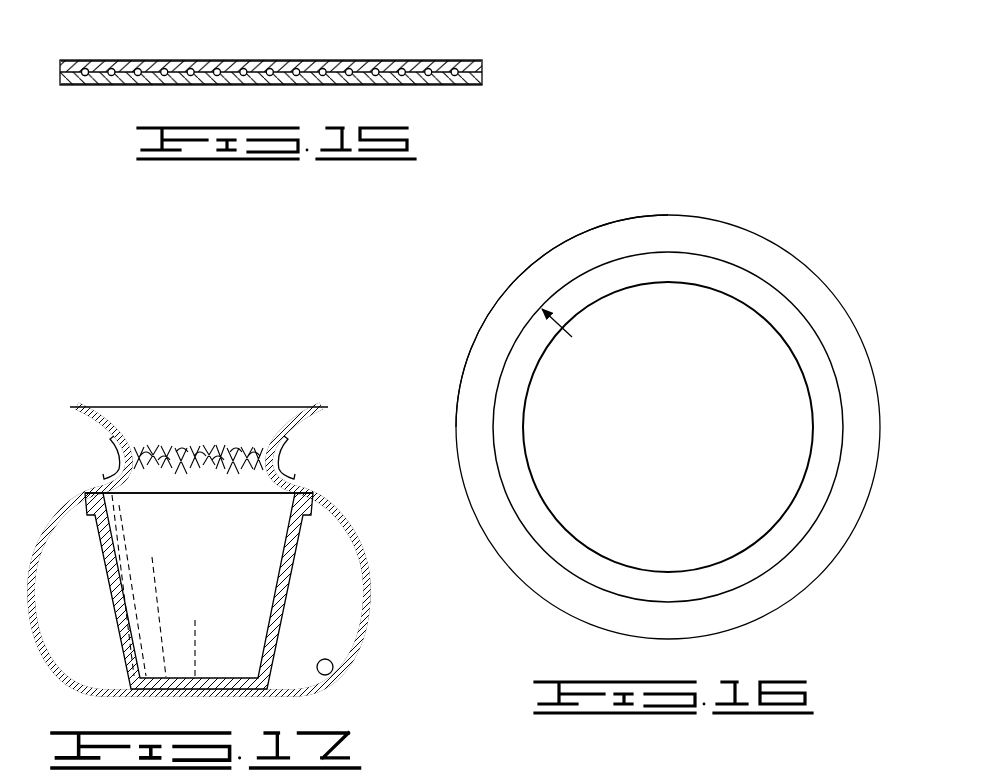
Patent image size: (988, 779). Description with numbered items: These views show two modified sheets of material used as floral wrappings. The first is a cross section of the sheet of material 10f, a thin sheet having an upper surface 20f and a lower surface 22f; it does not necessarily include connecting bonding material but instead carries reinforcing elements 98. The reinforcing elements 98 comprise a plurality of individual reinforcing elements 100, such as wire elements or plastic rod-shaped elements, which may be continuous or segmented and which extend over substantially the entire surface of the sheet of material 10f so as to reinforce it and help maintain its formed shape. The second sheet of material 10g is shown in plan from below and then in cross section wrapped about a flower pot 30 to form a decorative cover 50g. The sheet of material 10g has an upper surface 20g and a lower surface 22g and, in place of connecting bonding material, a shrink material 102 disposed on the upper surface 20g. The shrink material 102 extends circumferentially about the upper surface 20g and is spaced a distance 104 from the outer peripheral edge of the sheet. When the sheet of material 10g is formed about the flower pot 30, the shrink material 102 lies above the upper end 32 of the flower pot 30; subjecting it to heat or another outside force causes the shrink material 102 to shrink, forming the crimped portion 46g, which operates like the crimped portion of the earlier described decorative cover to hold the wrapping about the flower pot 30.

In FIG. 15, the sheet of material 10f is at (169, 56).
In FIG. 15, the upper surface 20f is at (270, 60).
In FIG. 15, the lower surface 22f is at (413, 86).
In FIG. 15, the reinforcing elements 98 is at (111, 63).
In FIG. 15, the reinforcing element 100 is at (85, 81).
In FIG. 16, the sheet of material 10g is at (667, 210).
In FIG. 17, the sheet of material 10g is at (243, 553).
In FIG. 16, the upper surface 20g is at (592, 243).
In FIG. 17, the upper surface 20g is at (328, 675).
In FIG. 17, the lower surface 22g is at (353, 647).
In FIG. 16, the shrink material 102 is at (745, 285).
In FIG. 17, the shrink material 102 is at (278, 460).
In FIG. 16, the distance 104 is at (509, 280).
In FIG. 17, the crimped portion 46g is at (116, 460).
In FIG. 17, the upper end 32 is at (92, 491).
In FIG. 17, the decorative cover 50g is at (348, 490).
In FIG. 17, the flower pot 30 is at (287, 593).